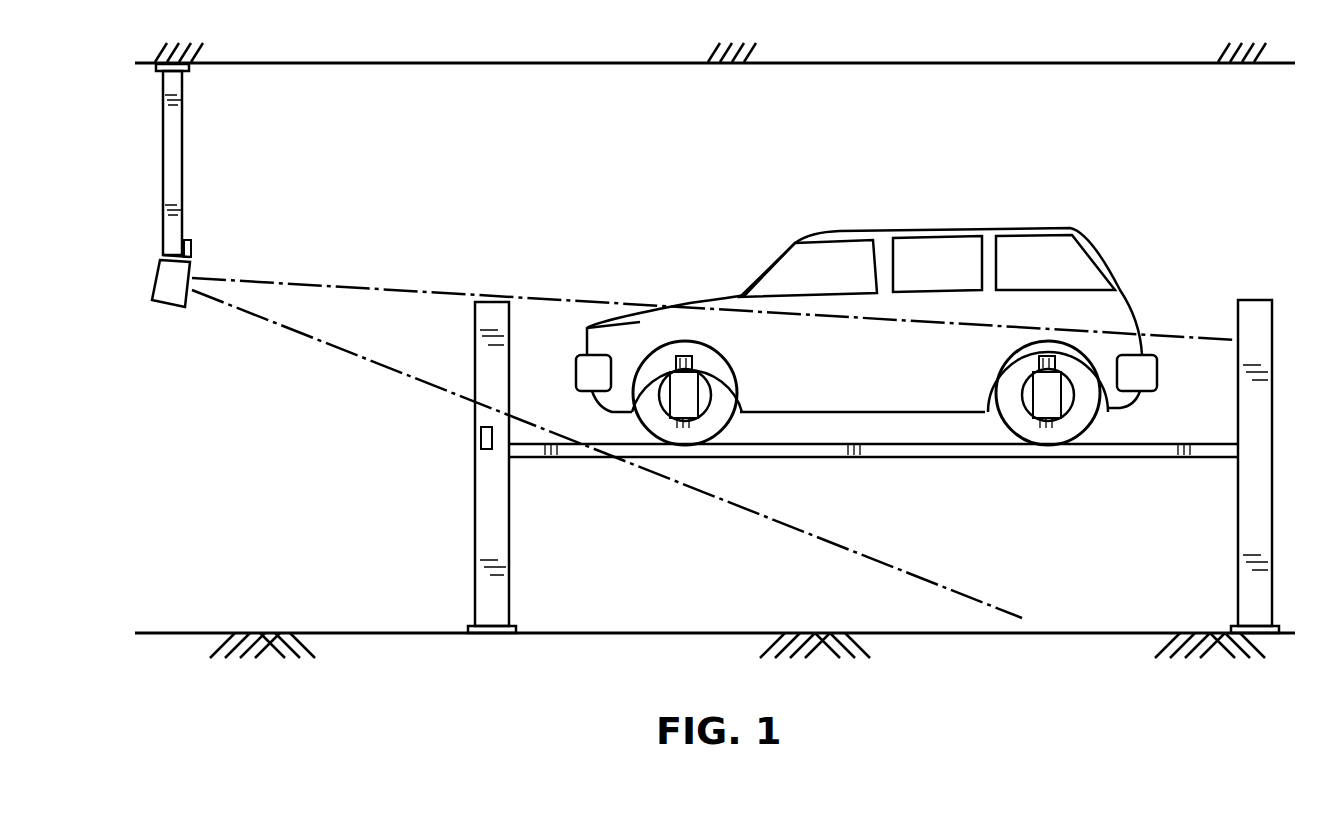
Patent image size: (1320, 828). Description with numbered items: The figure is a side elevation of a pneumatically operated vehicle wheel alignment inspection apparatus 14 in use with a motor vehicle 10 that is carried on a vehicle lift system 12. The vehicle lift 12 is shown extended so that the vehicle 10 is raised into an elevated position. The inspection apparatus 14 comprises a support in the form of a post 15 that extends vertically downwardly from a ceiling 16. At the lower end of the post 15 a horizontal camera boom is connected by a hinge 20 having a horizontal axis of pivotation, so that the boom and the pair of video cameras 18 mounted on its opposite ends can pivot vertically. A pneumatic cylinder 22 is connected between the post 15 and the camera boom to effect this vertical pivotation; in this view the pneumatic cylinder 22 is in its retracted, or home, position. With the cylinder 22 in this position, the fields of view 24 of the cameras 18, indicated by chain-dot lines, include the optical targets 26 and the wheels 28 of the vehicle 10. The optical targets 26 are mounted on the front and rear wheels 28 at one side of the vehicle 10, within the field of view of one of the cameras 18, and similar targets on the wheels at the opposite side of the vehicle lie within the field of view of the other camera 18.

The motor vehicle 10 is at (981, 200).
The vehicle lift system 12 is at (425, 520).
The pneumatically operated vehicle wheel alignment inspection apparatus 14 is at (181, 296).
The post 15 is at (176, 152).
The ceiling 16 is at (368, 70).
The video cameras 18 is at (178, 300).
The hinge 20 is at (163, 255).
The pneumatic cylinder 22 is at (190, 246).
The fields of view 24 is at (376, 262).
The optical targets 26 is at (692, 398).
The wheels 28 is at (655, 413).